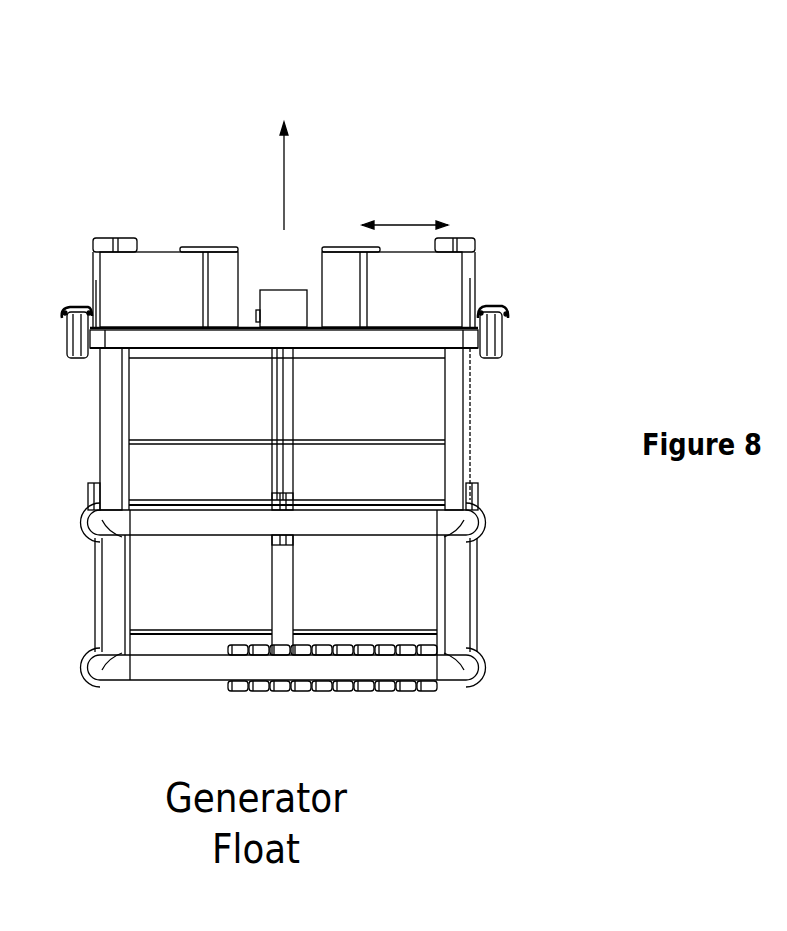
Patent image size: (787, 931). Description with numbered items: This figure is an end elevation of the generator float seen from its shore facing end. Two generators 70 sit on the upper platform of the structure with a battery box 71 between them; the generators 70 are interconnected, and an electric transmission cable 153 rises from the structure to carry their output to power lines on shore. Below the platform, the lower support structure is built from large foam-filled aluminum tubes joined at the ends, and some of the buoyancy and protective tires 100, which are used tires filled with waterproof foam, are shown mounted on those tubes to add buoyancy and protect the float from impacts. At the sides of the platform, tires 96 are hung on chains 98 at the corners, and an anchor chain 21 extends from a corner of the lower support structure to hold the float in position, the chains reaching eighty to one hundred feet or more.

The electric transmission cable 153 is at (304, 128).
The generator 70 is at (427, 183).
The battery box 71 is at (281, 286).
The tire 96 is at (502, 337).
The chain 98 is at (508, 312).
The buoyancy and protective tire 100 is at (283, 543).
The anchor chain 21 is at (483, 682).